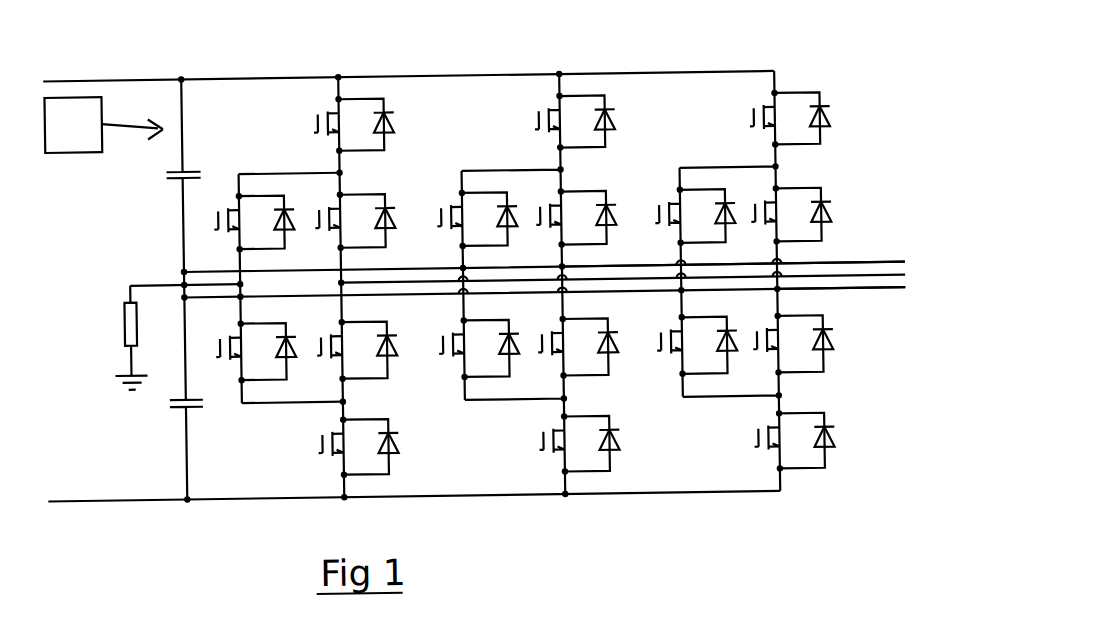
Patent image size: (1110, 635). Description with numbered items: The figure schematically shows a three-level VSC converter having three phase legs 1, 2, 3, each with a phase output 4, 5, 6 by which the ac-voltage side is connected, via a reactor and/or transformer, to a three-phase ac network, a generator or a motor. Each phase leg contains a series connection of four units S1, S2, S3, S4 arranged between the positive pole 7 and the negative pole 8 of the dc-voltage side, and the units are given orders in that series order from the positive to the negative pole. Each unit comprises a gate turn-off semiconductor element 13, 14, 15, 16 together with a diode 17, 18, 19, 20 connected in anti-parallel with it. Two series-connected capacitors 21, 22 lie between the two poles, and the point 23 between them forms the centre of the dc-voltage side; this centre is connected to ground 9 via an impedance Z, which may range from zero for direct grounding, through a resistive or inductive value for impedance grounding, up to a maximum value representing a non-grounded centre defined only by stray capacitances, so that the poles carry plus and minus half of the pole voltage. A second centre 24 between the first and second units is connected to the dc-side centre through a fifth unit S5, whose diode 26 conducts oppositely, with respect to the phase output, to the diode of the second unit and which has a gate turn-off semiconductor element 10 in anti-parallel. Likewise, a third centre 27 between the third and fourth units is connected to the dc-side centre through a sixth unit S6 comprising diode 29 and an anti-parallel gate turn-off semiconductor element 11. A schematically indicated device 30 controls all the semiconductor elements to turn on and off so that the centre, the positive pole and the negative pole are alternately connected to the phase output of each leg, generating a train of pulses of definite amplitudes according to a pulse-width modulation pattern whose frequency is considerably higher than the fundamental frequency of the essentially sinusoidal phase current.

The phase leg 1 is at (327, 316).
The phase leg 2 is at (564, 506).
The phase leg 3 is at (778, 506).
The phase output 4 is at (345, 284).
The phase output 5 is at (570, 271).
The phase output 6 is at (778, 290).
The positive pole 7 is at (135, 79).
The negative pole 8 is at (118, 497).
The ground 9 is at (120, 383).
The gate turn-off semiconductor element 10 is at (218, 214).
The gate turn-off semiconductor element 11 is at (214, 355).
The gate turn-off semiconductor element 13 is at (318, 125).
The gate turn-off semiconductor element 14 is at (318, 222).
The gate turn-off semiconductor element 15 is at (319, 349).
The gate turn-off semiconductor element 16 is at (318, 454).
The diode 17 is at (391, 124).
The diode 18 is at (390, 219).
The diode 19 is at (392, 350).
The diode 20 is at (391, 442).
The capacitor 21 is at (172, 178).
The capacitor 22 is at (168, 409).
The point 23 is at (183, 286).
The second centre 24 is at (344, 177).
The diode 26 is at (288, 231).
The third centre 27 is at (344, 405).
The diode 29 is at (288, 363).
The device 30 is at (73, 152).
The first unit S1 is at (359, 119).
The second unit S2 is at (379, 200).
The third unit S3 is at (377, 344).
The fourth unit S4 is at (363, 436).
The fifth unit S5 is at (263, 204).
The sixth unit S6 is at (259, 379).
The impedance Z is at (124, 330).